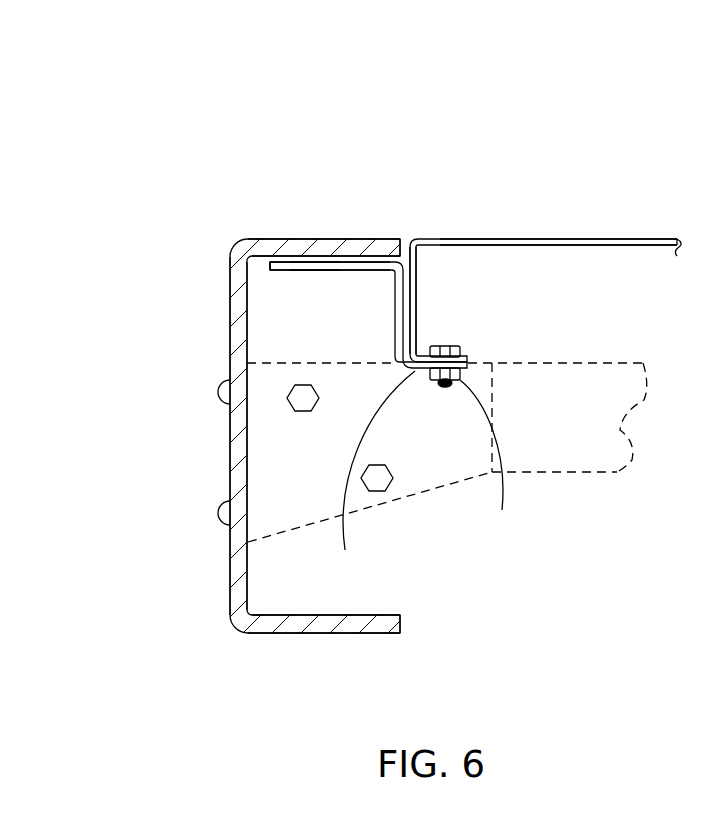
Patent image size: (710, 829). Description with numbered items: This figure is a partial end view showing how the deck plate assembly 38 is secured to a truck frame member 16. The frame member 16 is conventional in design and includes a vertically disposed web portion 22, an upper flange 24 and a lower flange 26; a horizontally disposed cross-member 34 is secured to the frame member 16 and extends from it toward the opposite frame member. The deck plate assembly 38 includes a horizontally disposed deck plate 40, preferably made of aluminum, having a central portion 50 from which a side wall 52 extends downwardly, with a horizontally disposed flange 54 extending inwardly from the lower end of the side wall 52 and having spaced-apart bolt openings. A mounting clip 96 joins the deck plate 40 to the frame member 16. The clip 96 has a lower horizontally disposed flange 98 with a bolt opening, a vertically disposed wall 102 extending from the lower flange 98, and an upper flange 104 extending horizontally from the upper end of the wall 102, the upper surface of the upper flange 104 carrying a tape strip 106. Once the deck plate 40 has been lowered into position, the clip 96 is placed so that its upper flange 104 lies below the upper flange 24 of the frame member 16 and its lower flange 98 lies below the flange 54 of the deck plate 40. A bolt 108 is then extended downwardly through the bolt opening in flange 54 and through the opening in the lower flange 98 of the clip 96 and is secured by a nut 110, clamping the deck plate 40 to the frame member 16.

The frame member 16 is at (256, 212).
The web portion 22 is at (237, 322).
The upper flange 24 is at (352, 240).
The lower flange 26 is at (282, 627).
The cross-member 34 is at (565, 392).
The deck plate assembly 38 is at (472, 217).
The deck plate 40 is at (547, 238).
The central portion 50 is at (622, 238).
The side wall 52 is at (417, 300).
The flange 54 is at (467, 358).
The mounting clip 96 is at (288, 268).
The lower flange 98 is at (375, 477).
The wall 102 is at (397, 297).
The upper flange 104 is at (343, 270).
The tape strip 106 is at (308, 258).
The bolt 108 is at (448, 350).
The nut 110 is at (490, 461).